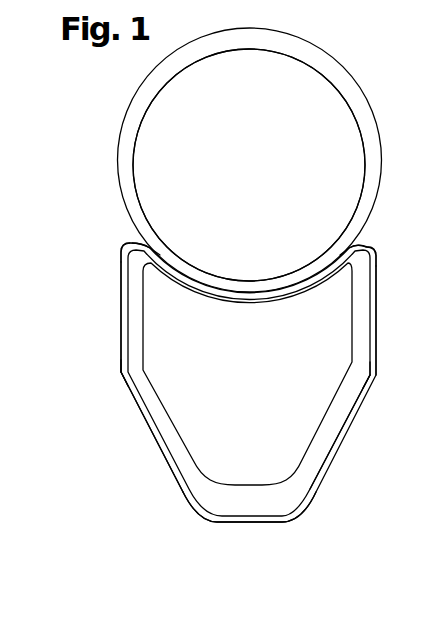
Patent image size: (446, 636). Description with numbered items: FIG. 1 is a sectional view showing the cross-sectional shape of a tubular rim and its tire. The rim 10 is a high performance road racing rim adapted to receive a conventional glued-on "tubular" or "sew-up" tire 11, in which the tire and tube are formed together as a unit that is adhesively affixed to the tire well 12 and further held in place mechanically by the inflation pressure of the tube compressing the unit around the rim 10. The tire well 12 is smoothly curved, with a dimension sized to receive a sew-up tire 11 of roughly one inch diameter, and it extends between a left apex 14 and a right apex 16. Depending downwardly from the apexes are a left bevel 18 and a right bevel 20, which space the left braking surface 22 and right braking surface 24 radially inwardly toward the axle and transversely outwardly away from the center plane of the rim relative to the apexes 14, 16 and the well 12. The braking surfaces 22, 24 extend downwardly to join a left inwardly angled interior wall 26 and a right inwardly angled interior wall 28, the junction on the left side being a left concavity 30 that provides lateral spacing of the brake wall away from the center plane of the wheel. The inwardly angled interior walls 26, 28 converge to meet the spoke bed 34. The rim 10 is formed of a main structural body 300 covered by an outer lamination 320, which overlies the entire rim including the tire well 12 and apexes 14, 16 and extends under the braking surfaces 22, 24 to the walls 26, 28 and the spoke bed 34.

The rim 10 is at (322, 492).
The tire 11 is at (363, 92).
The tire well 12 is at (249, 165).
The left apex 14 is at (128, 247).
The right apex 16 is at (353, 243).
The left bevel 18 is at (122, 258).
The right bevel 20 is at (373, 253).
The left braking surface 22 is at (122, 330).
The right braking surface 24 is at (377, 332).
The left inwardly angled interior wall 26 is at (157, 440).
The right inwardly angled interior wall 28 is at (347, 437).
The left concavity 30 is at (122, 377).
The spoke bed 34 is at (247, 523).
The main structural body 300 is at (352, 362).
The outer lamination 320 is at (371, 377).